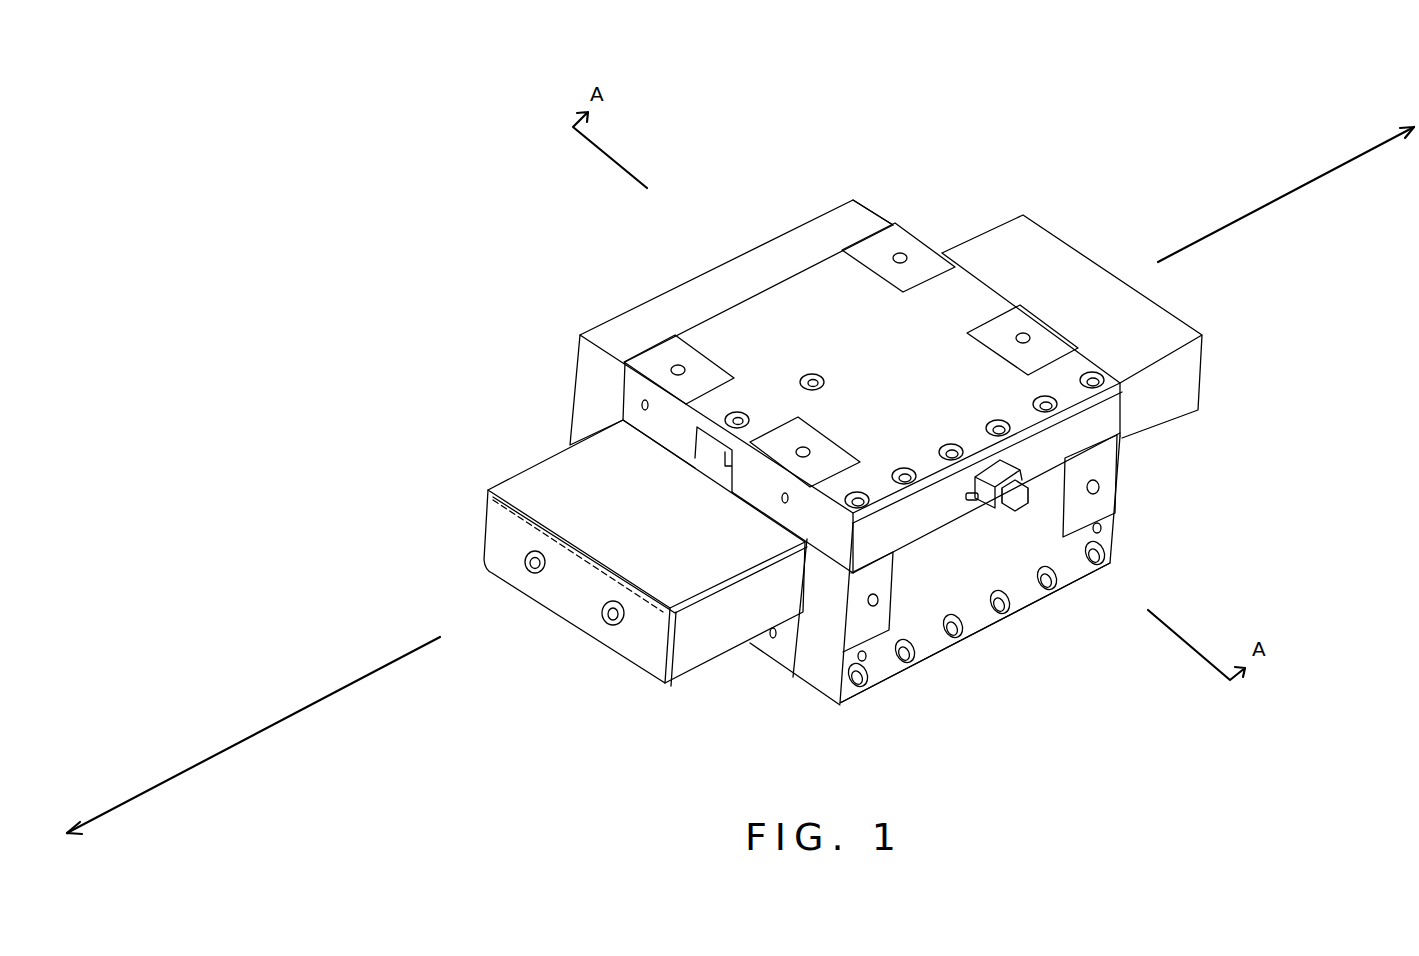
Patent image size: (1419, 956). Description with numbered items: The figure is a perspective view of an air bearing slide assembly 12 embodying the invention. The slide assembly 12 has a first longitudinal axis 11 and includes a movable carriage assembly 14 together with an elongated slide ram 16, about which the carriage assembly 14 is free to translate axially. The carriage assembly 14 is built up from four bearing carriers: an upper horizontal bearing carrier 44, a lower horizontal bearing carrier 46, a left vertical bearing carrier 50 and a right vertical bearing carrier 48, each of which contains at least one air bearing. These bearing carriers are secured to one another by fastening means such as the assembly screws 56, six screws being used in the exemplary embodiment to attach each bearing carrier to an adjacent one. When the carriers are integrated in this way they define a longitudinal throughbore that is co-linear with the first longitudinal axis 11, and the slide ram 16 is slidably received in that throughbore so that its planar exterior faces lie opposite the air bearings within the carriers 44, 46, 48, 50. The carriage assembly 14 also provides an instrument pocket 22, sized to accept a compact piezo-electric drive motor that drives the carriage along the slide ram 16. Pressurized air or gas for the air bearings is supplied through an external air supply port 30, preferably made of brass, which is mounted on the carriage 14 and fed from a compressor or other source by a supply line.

The first longitudinal axis 11 is at (225, 732).
The air bearing slide assembly 12 is at (621, 261).
The movable carriage assembly 14 is at (779, 222).
The elongated slide ram 16 is at (518, 462).
The instrument pocket 22 is at (712, 468).
The external air supply port 30 is at (998, 510).
The upper horizontal bearing carrier 44 is at (873, 373).
The lower horizontal bearing carrier 46 is at (768, 656).
The right vertical bearing carrier 48 is at (980, 569).
The left vertical bearing carrier 50 is at (736, 281).
The assembly screws 56 is at (910, 663).